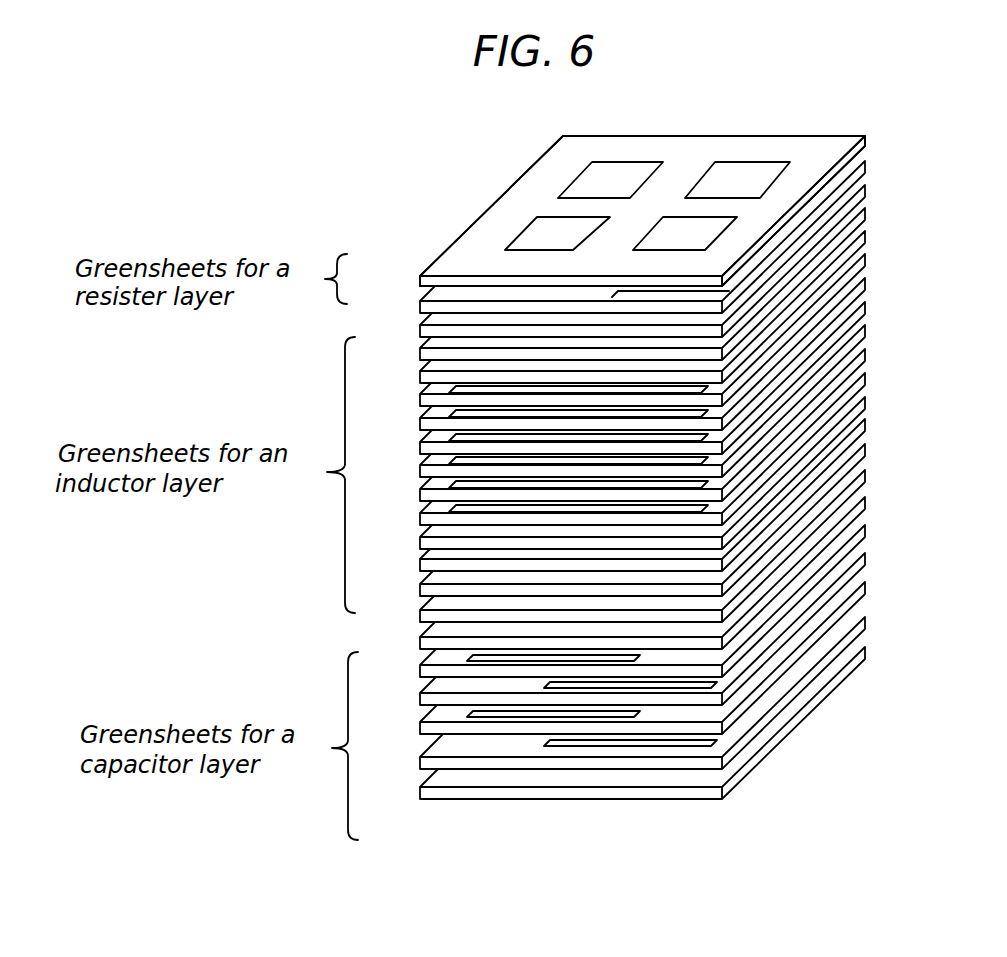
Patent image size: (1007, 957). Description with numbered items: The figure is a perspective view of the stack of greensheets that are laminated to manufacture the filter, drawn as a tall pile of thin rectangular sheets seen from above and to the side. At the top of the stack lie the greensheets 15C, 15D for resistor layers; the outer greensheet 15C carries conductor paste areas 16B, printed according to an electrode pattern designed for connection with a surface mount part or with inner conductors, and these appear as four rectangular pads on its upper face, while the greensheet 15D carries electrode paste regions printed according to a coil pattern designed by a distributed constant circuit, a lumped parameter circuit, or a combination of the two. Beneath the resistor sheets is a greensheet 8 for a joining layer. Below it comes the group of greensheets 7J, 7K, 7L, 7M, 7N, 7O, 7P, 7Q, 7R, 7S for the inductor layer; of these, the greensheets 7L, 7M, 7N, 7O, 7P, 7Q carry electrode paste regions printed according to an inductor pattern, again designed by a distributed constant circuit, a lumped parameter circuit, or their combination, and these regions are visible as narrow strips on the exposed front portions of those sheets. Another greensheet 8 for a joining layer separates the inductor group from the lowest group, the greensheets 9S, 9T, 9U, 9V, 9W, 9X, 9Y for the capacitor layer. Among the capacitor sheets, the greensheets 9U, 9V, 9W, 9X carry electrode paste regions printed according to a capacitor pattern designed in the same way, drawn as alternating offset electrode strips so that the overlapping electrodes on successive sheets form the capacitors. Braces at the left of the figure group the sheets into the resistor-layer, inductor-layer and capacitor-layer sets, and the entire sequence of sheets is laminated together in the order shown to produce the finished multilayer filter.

The conductor paste areas 16B is at (537, 226).
The greensheet for resistor layer 15C is at (421, 285).
The greensheet for resistor layer 15D is at (421, 312).
The greensheet for joining layer 8 is at (421, 336).
The greensheet for inductor layer 7J is at (421, 359).
The greensheet for inductor layer 7K is at (421, 382).
The greensheet for inductor layer 7L is at (421, 405).
The greensheet for inductor layer 7M is at (421, 429).
The greensheet for inductor layer 7N is at (421, 453).
The greensheet for inductor layer 7O is at (421, 476).
The greensheet for inductor layer 7P is at (421, 500).
The greensheet for inductor layer 7Q is at (421, 524).
The greensheet for inductor layer 7R is at (421, 548).
The greensheet for inductor layer 7S is at (421, 570).
The greensheet for capacitor layer 9S is at (421, 621).
The greensheet for capacitor layer 9T is at (421, 648).
The greensheet for capacitor layer 9U is at (421, 676).
The greensheet for capacitor layer 9V is at (421, 704).
The greensheet for capacitor layer 9W is at (421, 733).
The greensheet for capacitor layer 9X is at (421, 768).
The greensheet for capacitor layer 9Y is at (421, 798).